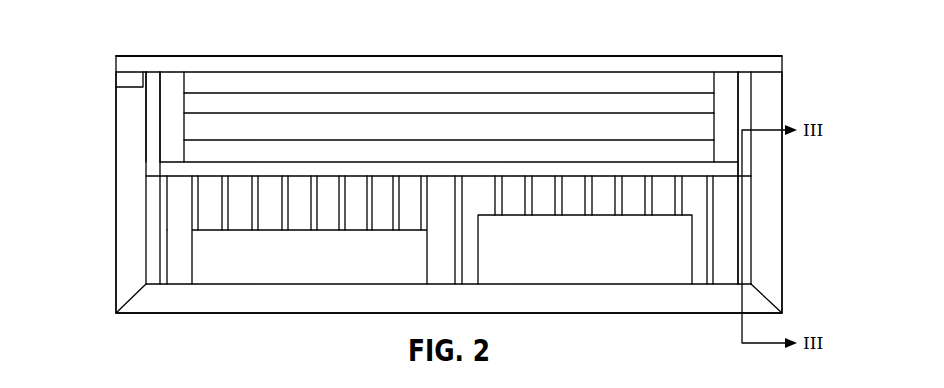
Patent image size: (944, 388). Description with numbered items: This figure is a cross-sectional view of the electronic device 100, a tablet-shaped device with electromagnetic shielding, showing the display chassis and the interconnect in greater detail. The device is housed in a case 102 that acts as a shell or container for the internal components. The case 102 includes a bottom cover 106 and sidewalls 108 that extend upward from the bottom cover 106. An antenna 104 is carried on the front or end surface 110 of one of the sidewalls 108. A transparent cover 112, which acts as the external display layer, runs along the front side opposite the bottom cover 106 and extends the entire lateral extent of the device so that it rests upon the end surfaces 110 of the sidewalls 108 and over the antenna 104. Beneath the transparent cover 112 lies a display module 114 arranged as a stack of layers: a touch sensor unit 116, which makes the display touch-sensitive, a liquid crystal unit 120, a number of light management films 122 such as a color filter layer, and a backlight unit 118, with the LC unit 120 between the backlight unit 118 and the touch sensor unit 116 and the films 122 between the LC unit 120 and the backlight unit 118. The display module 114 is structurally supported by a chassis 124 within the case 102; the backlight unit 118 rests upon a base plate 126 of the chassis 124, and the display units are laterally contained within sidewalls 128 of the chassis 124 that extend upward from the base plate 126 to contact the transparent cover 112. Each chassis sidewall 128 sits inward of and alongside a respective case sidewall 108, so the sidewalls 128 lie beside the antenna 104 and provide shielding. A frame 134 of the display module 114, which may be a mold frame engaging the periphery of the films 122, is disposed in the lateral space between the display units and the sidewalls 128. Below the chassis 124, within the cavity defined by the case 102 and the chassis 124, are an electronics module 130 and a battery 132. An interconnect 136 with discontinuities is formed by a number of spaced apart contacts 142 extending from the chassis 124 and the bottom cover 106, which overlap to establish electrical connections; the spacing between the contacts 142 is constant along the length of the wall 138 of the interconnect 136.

The electronic device 100 is at (400, 29).
The case 102 is at (153, 315).
The antenna 104 is at (117, 71).
The bottom cover 106 is at (361, 306).
The sidewalls 108 is at (116, 179).
The end surface 110 is at (116, 80).
The transparent cover 112 is at (558, 54).
The display module 114 is at (733, 70).
The touch sensor unit 116 is at (526, 91).
The backlight unit 118 is at (487, 161).
The liquid crystal unit 120 is at (513, 113).
The light management films 122 is at (501, 135).
The chassis 124 is at (146, 139).
The base plate 126 is at (338, 163).
The sidewalls 128 is at (146, 129).
The electronics module 130 is at (324, 266).
The battery 132 is at (606, 263).
The frame 134 is at (157, 77).
The interconnect 136 is at (153, 216).
The wall 138 is at (153, 250).
The contacts 142 is at (467, 264).